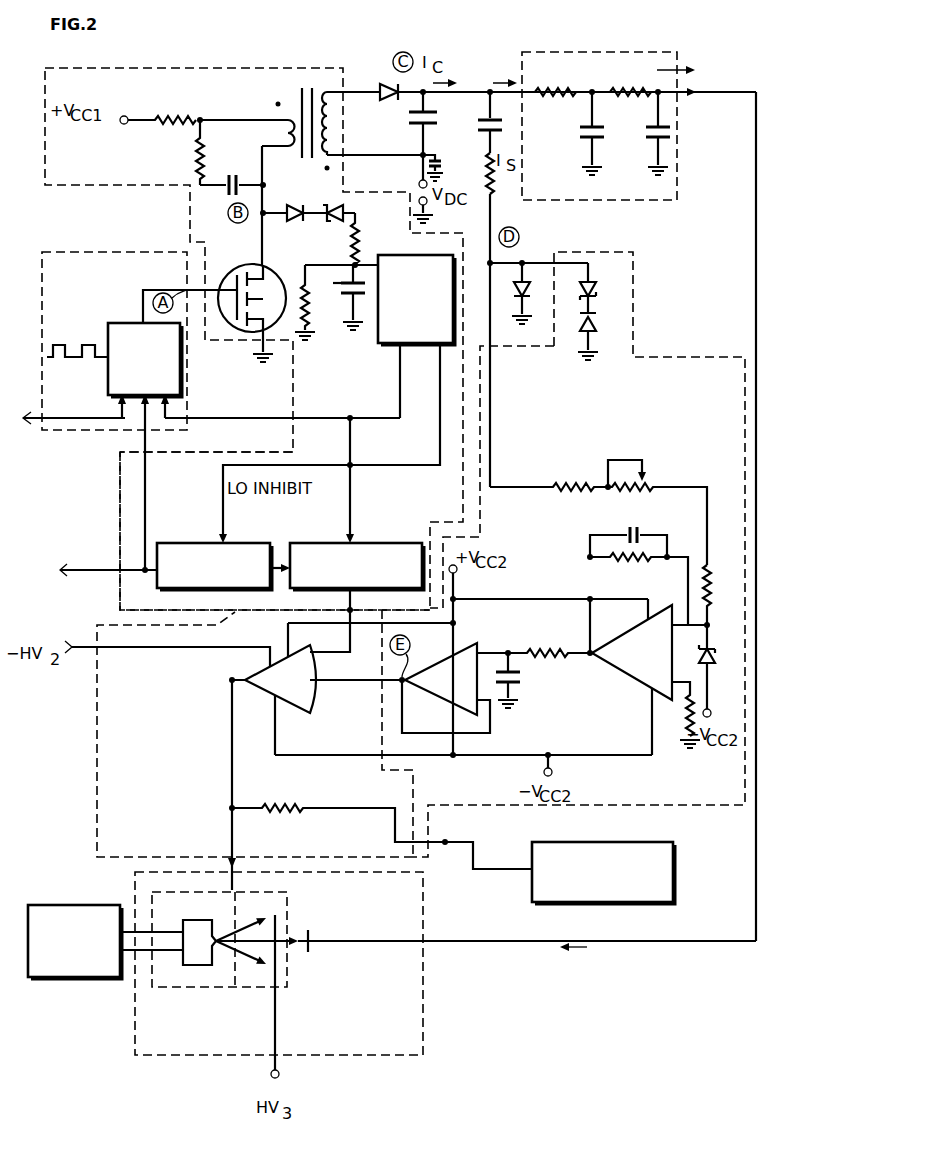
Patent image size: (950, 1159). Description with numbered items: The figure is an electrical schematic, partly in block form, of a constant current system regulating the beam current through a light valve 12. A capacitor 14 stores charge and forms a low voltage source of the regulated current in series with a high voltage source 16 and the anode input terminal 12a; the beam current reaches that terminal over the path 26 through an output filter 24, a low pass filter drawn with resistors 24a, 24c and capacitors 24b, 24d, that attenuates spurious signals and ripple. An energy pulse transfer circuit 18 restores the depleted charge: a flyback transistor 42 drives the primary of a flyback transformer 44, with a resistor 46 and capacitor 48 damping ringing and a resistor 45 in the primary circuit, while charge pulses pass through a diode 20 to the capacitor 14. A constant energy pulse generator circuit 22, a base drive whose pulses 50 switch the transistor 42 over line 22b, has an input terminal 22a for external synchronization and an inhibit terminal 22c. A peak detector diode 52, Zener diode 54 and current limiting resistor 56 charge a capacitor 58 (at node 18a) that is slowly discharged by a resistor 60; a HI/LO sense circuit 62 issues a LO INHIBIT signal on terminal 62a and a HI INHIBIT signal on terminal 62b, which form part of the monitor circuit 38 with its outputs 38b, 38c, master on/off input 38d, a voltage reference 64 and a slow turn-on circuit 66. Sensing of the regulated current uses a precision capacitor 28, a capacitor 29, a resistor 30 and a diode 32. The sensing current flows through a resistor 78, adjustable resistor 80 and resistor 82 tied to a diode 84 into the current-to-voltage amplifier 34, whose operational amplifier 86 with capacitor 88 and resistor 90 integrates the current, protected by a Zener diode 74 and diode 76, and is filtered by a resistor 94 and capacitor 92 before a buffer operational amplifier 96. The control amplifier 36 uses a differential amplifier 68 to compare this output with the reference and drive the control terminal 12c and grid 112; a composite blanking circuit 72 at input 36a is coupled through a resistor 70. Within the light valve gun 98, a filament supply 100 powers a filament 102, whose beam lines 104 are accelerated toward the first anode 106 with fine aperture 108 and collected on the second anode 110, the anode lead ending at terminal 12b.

The light valve 12 is at (425, 1044).
The input terminal 12a is at (455, 944).
The high voltage terminal 12b is at (280, 1075).
The input control terminal 12c is at (230, 850).
The capacitor 14 is at (410, 122).
The voltage source of high electrical potential 16 is at (416, 189).
The energy pulse transfer circuit 18 is at (205, 67).
The output port 18a is at (323, 278).
The diode 20 is at (384, 83).
The constant energy pulse generator circuit 22 is at (52, 252).
The input terminal 22a is at (34, 420).
The gate drive line 22b is at (196, 290).
The input terminal 22c is at (250, 452).
The output filter 24 is at (577, 50).
The resistor 24a is at (576, 86).
The capacitor 24b is at (580, 133).
The resistor 24c is at (646, 86).
The capacitor 24d is at (648, 125).
The path 26 is at (756, 265).
The precision capacitor 28 is at (484, 166).
The capacitor 29 is at (486, 128).
The resistor 30 is at (440, 164).
The diode 32 is at (514, 292).
The current-to-voltage amplifier 34 is at (670, 357).
The control amplifier 36 is at (96, 790).
The input 36a is at (448, 842).
The monitor circuit 38 is at (120, 490).
The output terminal 38b is at (283, 416).
The output terminal 38c is at (348, 610).
The input terminal 38d is at (106, 568).
The flyback transistor 42 is at (250, 265).
The flyback transformer 44 is at (300, 92).
The resistor 45 is at (156, 120).
The resistor 46 is at (196, 160).
The capacitor 48 is at (237, 162).
The pulses 50 is at (76, 343).
The peak detector diode 52 is at (298, 223).
The Zener diode 54 is at (338, 223).
The current limiting resistor 56 is at (358, 238).
The capacitor 58 is at (362, 272).
The resistor 60 is at (318, 315).
The HI/LO sense circuit 62 is at (382, 346).
The output terminal 62a is at (438, 448).
The output terminal 62b is at (400, 419).
The voltage reference 64 is at (400, 543).
The slow turn-on circuit 66 is at (234, 543).
The differential amplifier 68 is at (244, 679).
The resistor 70 is at (280, 805).
The composite blanking circuit 72 is at (662, 843).
The Zener diode 74 is at (600, 290).
The diode 76 is at (600, 323).
The resistor 78 is at (582, 485).
The adjustable resistor 80 is at (668, 485).
The resistor 82 is at (706, 572).
The diode 84 is at (700, 657).
The operational amplifier 86 is at (630, 685).
The capacitor 88 is at (638, 528).
The resistor 90 is at (620, 560).
The capacitor 92 is at (517, 680).
The resistor 94 is at (544, 650).
The operational amplifier 96 is at (470, 648).
The light valve gun 98 is at (170, 989).
The filament supply 100 is at (90, 979).
The filament 102 is at (211, 926).
The lines 104 is at (258, 958).
The first anode 106 is at (278, 1000).
The fine aperture 108 is at (280, 935).
The second anode 110 is at (310, 952).
The control grid 112 is at (235, 968).